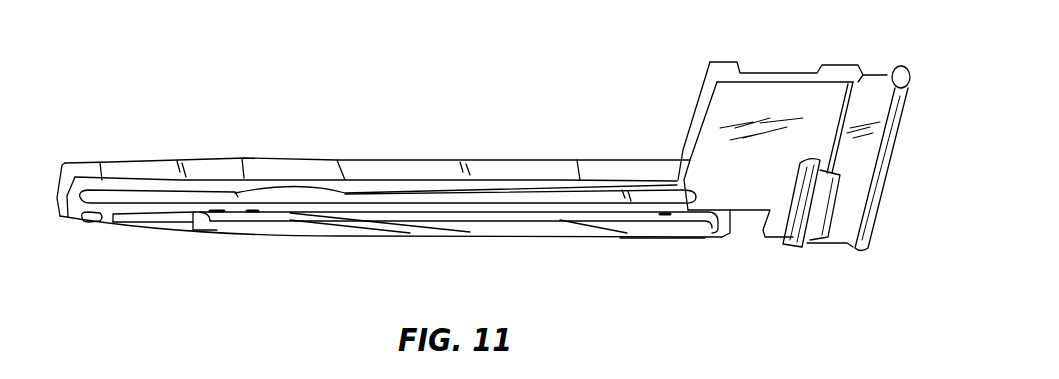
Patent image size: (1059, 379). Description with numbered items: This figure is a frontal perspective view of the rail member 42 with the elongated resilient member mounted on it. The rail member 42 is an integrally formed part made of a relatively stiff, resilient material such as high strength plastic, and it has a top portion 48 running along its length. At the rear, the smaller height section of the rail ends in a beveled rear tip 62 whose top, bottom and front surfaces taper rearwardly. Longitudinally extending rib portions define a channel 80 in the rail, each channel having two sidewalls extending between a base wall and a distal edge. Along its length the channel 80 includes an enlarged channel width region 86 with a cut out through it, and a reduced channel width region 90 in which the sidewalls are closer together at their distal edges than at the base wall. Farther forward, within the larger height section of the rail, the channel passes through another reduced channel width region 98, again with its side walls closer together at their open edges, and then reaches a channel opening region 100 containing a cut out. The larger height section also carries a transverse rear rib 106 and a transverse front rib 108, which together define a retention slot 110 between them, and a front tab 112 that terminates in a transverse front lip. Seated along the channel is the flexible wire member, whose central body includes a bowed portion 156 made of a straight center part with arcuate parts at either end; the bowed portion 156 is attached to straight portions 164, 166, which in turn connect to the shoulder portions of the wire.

The rail member 42 is at (232, 99).
The top portion 48 is at (372, 172).
The beveled rear tip 62 is at (66, 226).
The channel 80 is at (153, 218).
The enlarged channel width region 86 is at (197, 232).
The reduced channel width region 90 is at (233, 230).
The reduced channel width region 98 is at (650, 238).
The channel opening region 100 is at (718, 243).
The transverse rear rib 106 is at (790, 248).
The transverse front rib 108 is at (832, 247).
The retention slot 110 is at (823, 160).
The front tab 112 is at (853, 183).
The bowed portion 156 is at (427, 240).
The straight portion 164 is at (627, 238).
The straight portion 166 is at (262, 222).